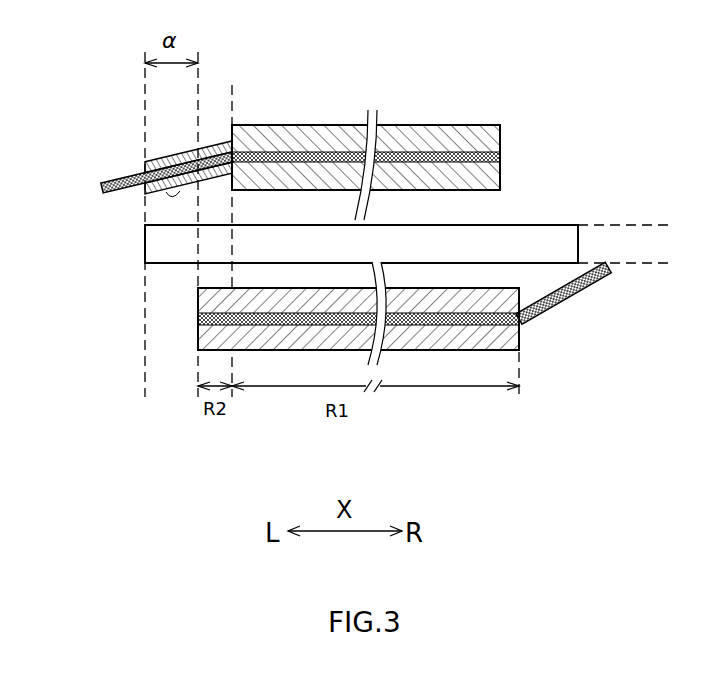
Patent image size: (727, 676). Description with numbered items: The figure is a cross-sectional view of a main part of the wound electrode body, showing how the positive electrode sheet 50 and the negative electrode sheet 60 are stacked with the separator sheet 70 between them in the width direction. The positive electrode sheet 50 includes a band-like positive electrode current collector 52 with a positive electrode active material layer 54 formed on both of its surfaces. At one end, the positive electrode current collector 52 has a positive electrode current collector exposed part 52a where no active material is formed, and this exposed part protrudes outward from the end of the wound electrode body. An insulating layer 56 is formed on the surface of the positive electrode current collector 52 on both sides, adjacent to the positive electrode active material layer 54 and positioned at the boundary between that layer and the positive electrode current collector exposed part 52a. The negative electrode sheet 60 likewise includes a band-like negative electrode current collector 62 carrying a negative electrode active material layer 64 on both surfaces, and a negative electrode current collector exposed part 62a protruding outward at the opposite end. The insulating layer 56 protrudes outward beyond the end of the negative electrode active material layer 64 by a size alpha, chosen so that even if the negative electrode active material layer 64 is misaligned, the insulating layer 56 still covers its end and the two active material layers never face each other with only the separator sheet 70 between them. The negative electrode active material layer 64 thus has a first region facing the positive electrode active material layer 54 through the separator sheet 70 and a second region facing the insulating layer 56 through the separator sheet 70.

The positive electrode sheet 50 is at (417, 109).
The positive electrode current collector 52 is at (500, 157).
The positive electrode current collector exposed part 52a is at (115, 182).
The positive electrode active material layer 54 is at (500, 137).
The insulating layer 56 is at (170, 155).
The negative electrode sheet 60 is at (348, 356).
The negative electrode current collector 62 is at (198, 319).
The negative electrode current collector exposed part 62a is at (581, 287).
The negative electrode active material layer 64 is at (198, 305).
The separator sheet 70 is at (145, 243).